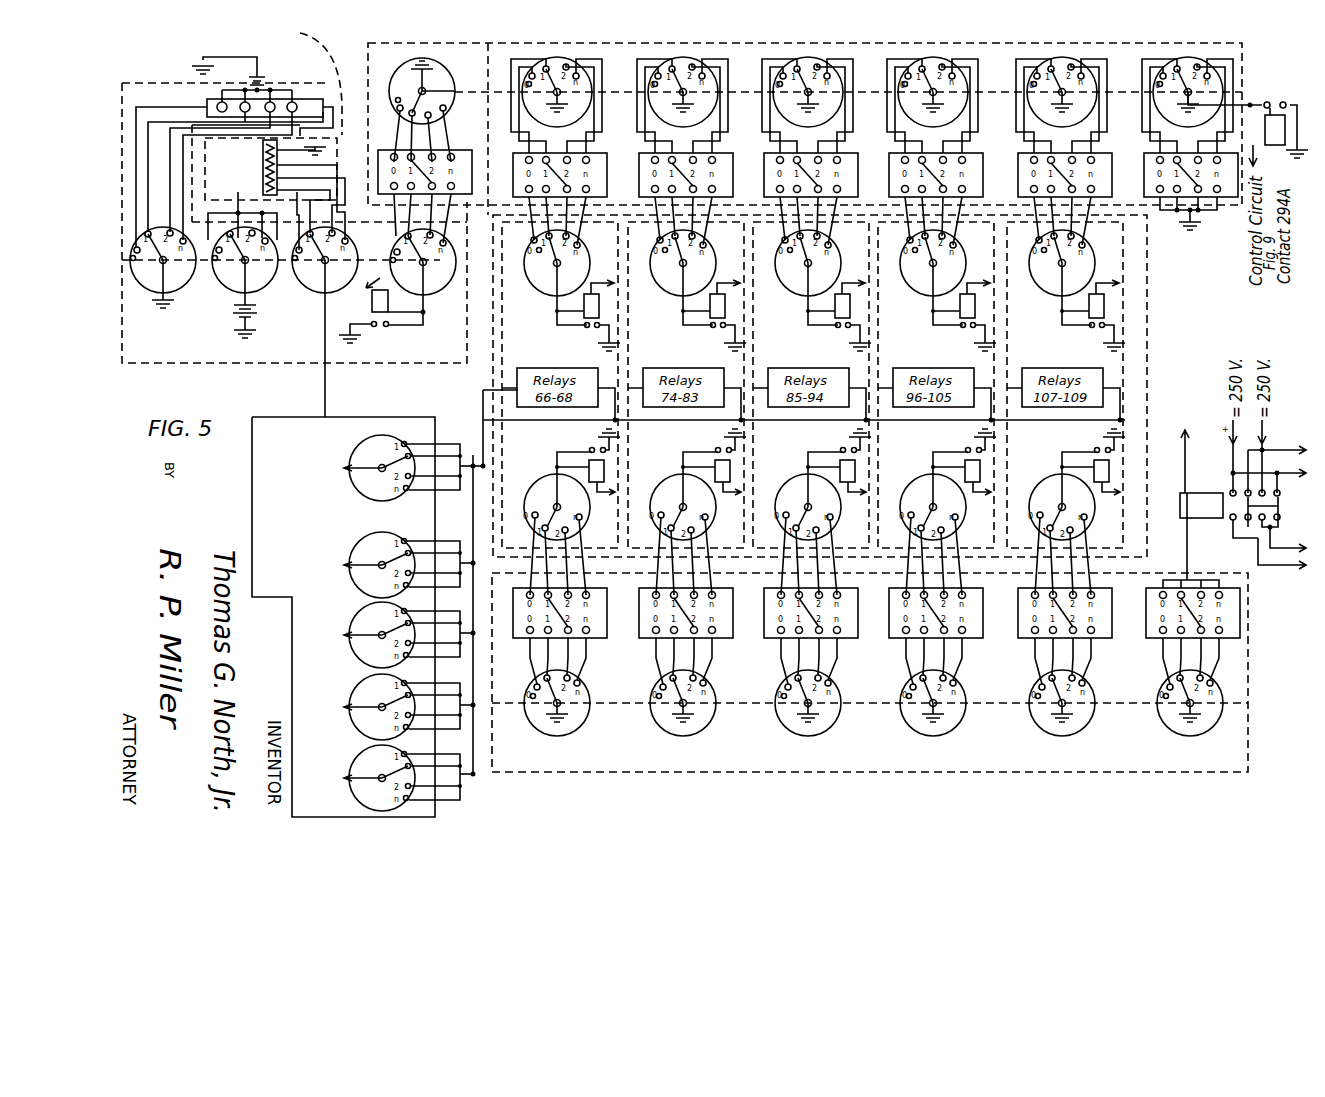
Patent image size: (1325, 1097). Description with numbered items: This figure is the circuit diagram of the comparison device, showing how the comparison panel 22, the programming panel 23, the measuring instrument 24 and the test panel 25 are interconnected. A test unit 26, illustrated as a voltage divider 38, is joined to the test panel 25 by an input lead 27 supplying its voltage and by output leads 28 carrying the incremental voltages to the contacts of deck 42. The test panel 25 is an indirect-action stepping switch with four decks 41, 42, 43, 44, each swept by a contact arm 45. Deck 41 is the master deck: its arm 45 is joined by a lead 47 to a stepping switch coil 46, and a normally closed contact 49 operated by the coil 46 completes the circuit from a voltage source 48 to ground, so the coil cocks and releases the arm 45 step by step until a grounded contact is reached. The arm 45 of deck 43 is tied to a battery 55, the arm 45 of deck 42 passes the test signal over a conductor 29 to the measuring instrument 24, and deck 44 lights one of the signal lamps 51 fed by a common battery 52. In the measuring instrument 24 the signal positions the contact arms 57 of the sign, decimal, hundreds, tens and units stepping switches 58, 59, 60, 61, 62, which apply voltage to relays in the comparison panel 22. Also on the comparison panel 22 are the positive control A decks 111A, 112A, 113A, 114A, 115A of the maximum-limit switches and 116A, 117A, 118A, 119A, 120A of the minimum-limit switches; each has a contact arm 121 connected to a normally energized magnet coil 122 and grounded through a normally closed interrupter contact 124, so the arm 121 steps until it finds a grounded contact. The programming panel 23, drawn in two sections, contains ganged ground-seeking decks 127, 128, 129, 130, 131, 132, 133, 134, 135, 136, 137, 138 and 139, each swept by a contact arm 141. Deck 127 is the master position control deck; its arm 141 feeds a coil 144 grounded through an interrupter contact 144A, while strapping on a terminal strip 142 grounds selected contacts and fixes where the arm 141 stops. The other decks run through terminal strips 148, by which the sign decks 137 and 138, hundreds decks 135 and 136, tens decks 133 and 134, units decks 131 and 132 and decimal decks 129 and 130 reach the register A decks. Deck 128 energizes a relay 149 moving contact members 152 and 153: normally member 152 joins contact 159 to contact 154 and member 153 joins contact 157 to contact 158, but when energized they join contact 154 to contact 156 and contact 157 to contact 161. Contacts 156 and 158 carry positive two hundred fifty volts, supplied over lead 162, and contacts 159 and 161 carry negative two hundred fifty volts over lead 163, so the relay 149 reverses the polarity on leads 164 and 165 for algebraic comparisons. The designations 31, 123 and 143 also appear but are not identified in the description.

The comparison panel 22 is at (1147, 290).
The programming panel 23 is at (1242, 52).
The measuring instrument 24 is at (252, 472).
The test panel 25 is at (150, 365).
The test unit 26 is at (336, 152).
The input lead 27 is at (236, 198).
The output leads 28 is at (320, 192).
The conductor 29 is at (326, 398).
The bus conductor 31 is at (483, 440).
The voltage divider 38 is at (262, 150).
The master deck 41 is at (423, 277).
The deck 42 is at (310, 292).
The deck 43 is at (233, 292).
The deck 44 is at (190, 285).
The contact arm 45 is at (281, 257).
The stepping switch coil 46 is at (378, 322).
The lead 47 is at (440, 269).
The voltage source 48 is at (375, 277).
The normally closed contact 49 is at (387, 328).
The signal lamps 51 is at (292, 102).
The common battery 52 is at (260, 77).
The battery 55 is at (235, 318).
The contact arm 57 is at (384, 613).
The sign stepping switch 58 is at (350, 492).
The decimal stepping switch 59 is at (345, 570).
The hundreds stepping switch 60 is at (352, 644).
The tens stepping switch 61 is at (352, 718).
The units stepping switch 62 is at (352, 788).
The A deck of maximum-limit sign stepping switch 111A is at (540, 307).
The A deck of maximum-limit decimal stepping switch 112A is at (660, 295).
The A deck of maximum-limit hundreds stepping switch 113A is at (790, 290).
The A deck of maximum-limit tens stepping switch 114A is at (910, 293).
The A deck of maximum-limit units stepping switch 115A is at (1045, 297).
The A deck of minimum-limit sign stepping switch 116A is at (540, 474).
The A deck of minimum-limit decimal stepping switch 117A is at (665, 472).
The A deck of minimum-limit hundreds stepping switch 118A is at (780, 485).
The A deck of minimum-limit tens stepping switch 119A is at (905, 485).
The A deck of minimum-limit stepping switch 120A is at (1035, 485).
The contact arm 121 is at (794, 382).
The stepping switch magnet coil 122 is at (583, 325).
The conductor 123 is at (605, 427).
The normally closed interrupter contact 124 is at (585, 328).
The master position control deck 127 is at (1154, 106).
The stepping switch deck 128 is at (1162, 722).
The decimal point deck 129 is at (1028, 106).
The decimal point deck 130 is at (1038, 718).
The units digit deck 131 is at (898, 106).
The units digit deck 132 is at (913, 730).
The tens digit deck 133 is at (773, 106).
The tens digit deck 134 is at (788, 730).
The hundreds digit deck 135 is at (648, 106).
The hundreds digit deck 136 is at (663, 730).
The sign deck 137 is at (522, 97).
The sign deck 138 is at (537, 730).
The stepping switch deck 139 is at (395, 92).
The contact arm 141 is at (1165, 690).
The terminal strip 142 is at (1217, 213).
The conductor 143 is at (1182, 228).
The coil 144 is at (1272, 147).
The interrupter contact 144A is at (1248, 126).
The terminal strip 148 is at (373, 150).
The relay 149 is at (1180, 500).
The contact member 152 is at (1248, 522).
The contact member 153 is at (1280, 508).
The contact 154 is at (1233, 540).
The contact 156 is at (1230, 493).
The contact 157 is at (1288, 525).
The contact 158 is at (1280, 493).
The contact 159 is at (1235, 490).
The contact 161 is at (1246, 475).
The lead 162 is at (1269, 465).
The lead 163 is at (1277, 435).
The lead 164 is at (1292, 572).
The lead 165 is at (1285, 553).